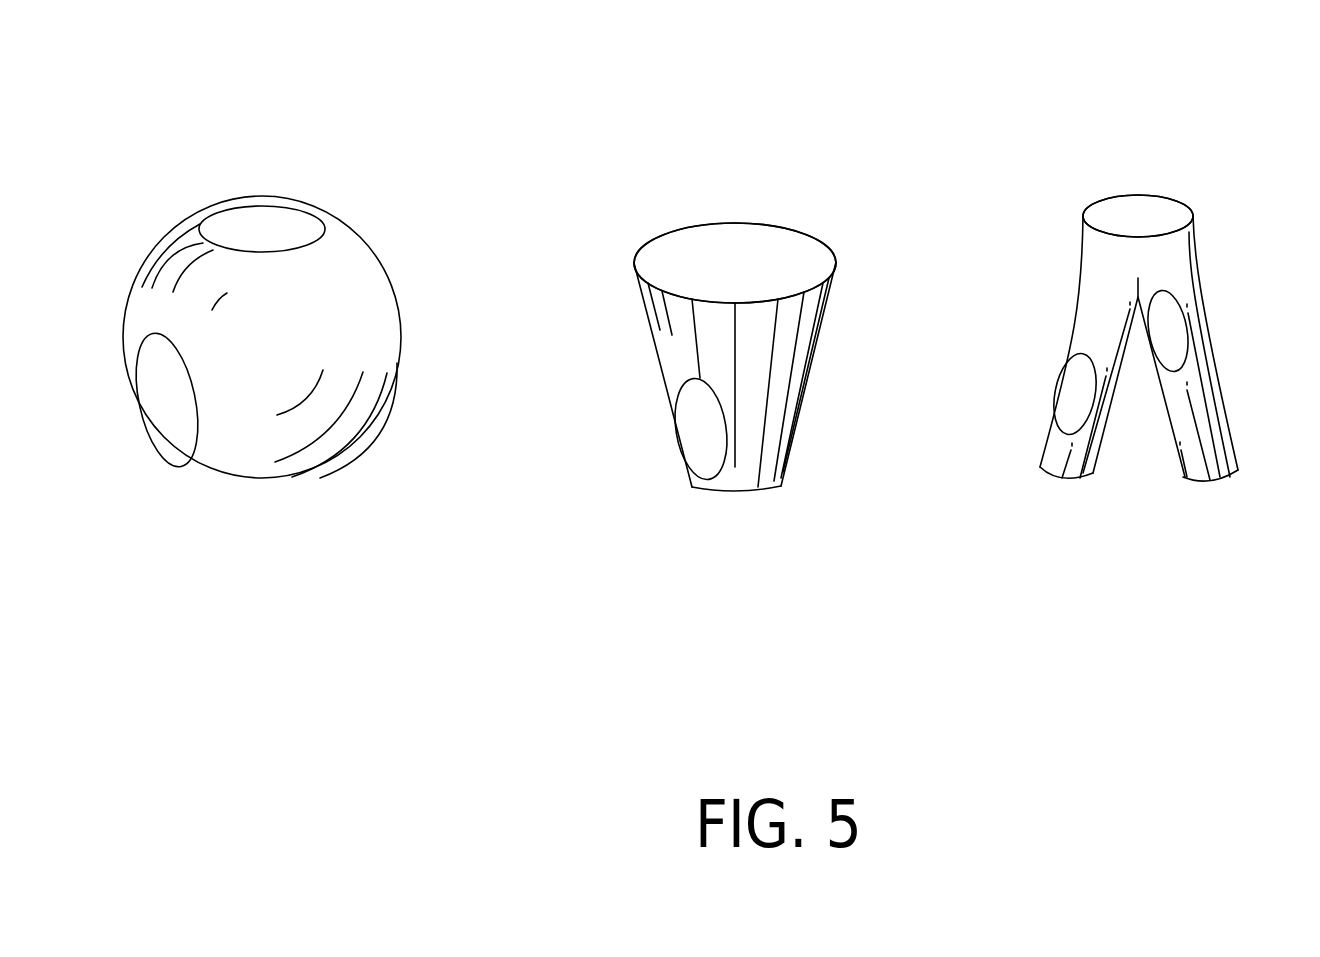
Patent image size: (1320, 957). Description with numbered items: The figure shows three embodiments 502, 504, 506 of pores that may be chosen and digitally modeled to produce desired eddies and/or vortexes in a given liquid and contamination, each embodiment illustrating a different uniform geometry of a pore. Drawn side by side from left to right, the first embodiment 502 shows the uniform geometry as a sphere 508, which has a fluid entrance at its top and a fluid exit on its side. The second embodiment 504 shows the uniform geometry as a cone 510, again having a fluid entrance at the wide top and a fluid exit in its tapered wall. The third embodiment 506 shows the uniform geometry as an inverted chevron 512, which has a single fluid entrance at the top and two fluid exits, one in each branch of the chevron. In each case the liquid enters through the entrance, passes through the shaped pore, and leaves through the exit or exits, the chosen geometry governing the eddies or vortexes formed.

The embodiment 502 is at (283, 275).
The embodiment 504 is at (768, 291).
The embodiment 506 is at (1136, 276).
The sphere 508 is at (388, 237).
The cone 510 is at (847, 236).
The inverted chevron 512 is at (1226, 238).